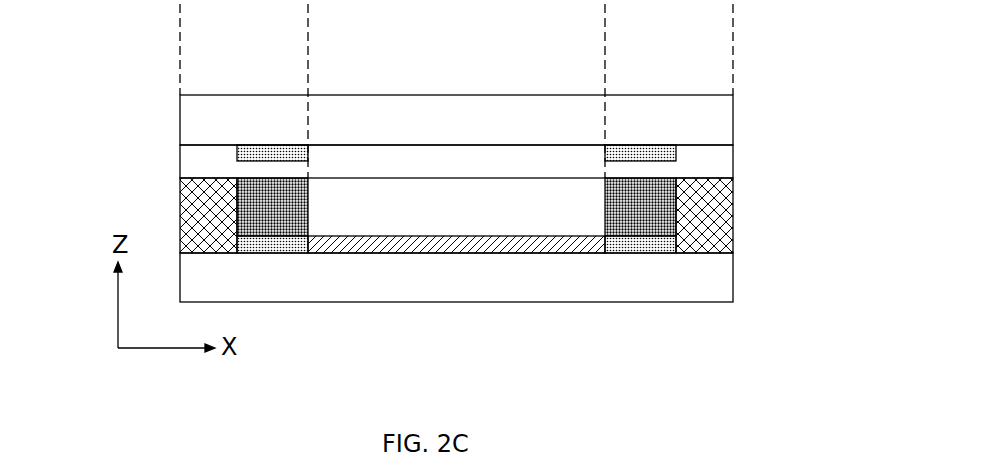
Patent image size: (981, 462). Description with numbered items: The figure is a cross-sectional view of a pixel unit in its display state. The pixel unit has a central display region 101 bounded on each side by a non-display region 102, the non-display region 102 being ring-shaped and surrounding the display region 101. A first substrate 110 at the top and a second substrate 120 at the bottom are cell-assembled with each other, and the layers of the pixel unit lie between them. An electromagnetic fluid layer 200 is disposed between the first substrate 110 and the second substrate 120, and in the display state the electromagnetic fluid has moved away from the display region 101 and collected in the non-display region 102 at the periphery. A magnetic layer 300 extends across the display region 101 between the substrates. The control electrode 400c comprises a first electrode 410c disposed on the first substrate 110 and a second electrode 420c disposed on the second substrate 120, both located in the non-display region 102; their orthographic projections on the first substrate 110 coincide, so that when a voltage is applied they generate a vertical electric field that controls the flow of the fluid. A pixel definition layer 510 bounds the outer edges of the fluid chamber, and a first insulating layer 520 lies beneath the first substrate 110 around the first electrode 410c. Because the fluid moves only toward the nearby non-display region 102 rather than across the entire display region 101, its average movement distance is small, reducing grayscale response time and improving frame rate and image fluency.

The display region 101 is at (605, 33).
The non-display region 102 is at (308, 20).
The first substrate 110 is at (408, 130).
The second substrate 120 is at (468, 277).
The electromagnetic fluid layer 200 is at (288, 198).
The magnetic layer 300 is at (553, 247).
The control electrode 400c is at (87, 45).
The first electrode 410c is at (262, 150).
The second electrode 420c is at (262, 245).
The pixel definition layer 510 is at (205, 220).
The first insulating layer 520 is at (722, 168).